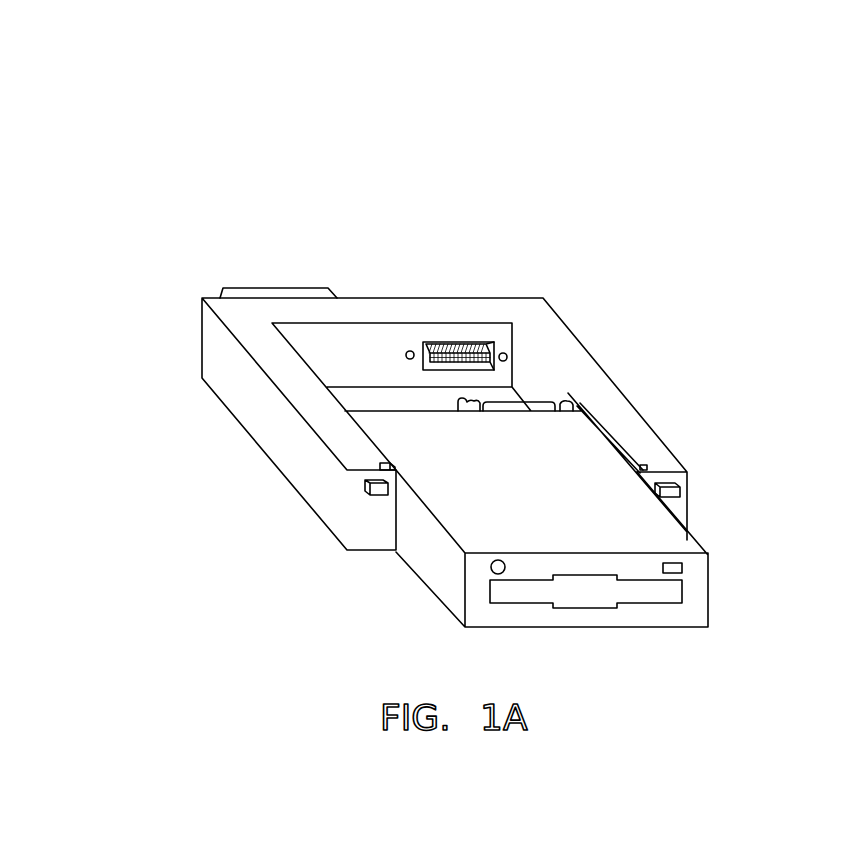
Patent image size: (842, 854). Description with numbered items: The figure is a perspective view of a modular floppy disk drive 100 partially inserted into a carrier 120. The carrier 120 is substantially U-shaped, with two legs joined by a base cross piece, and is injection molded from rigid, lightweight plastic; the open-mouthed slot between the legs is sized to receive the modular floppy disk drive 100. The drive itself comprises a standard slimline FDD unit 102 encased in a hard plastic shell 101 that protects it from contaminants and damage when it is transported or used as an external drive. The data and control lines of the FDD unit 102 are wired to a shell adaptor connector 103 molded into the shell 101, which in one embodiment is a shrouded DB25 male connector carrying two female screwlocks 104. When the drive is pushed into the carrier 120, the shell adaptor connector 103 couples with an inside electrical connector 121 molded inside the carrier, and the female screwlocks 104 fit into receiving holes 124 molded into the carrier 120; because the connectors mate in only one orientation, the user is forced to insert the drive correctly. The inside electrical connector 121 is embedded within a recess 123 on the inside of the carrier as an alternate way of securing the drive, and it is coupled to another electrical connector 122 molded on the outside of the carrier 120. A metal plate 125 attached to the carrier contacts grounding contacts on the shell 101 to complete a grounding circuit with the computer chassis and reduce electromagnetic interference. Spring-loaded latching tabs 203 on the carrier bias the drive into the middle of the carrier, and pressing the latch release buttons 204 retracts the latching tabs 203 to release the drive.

The modular floppy disk drive 100 is at (511, 457).
The shell 101 is at (587, 578).
The FDD unit 102 is at (595, 618).
The shell adaptor connector 103 is at (545, 401).
The female screwlocks 104 is at (570, 399).
The carrier 120 is at (480, 421).
The inside electrical connector 121 is at (442, 342).
The outside electrical connector 122 is at (288, 290).
The recess 123 is at (492, 342).
The receiving holes 124 is at (408, 351).
The metal plate 125 is at (375, 398).
The spring-loaded latching tabs 203 is at (408, 452).
The latch release buttons 204 is at (378, 497).